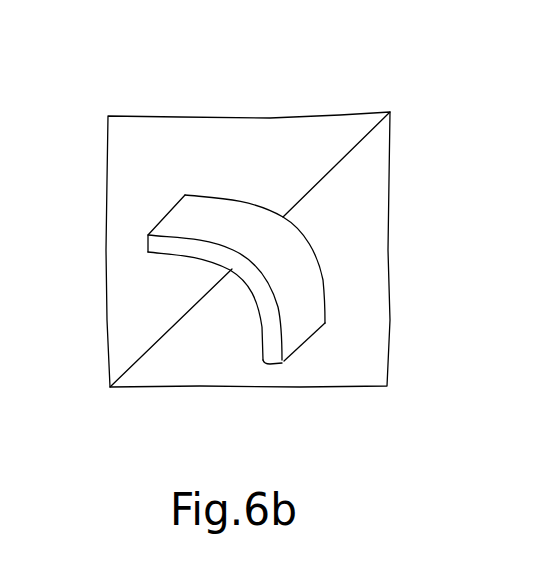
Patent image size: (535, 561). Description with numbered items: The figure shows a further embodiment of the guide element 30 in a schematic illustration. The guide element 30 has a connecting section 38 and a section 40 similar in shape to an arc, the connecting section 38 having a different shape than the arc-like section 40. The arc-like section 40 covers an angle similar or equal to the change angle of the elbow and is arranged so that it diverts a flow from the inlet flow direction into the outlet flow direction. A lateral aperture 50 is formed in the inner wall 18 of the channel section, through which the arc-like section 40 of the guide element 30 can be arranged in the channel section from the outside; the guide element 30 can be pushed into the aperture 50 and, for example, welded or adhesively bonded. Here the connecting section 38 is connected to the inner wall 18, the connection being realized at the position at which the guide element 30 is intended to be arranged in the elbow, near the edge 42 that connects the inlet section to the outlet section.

The inner wall 18 is at (124, 293).
The guide element 30 is at (302, 327).
The connecting section 38 is at (298, 248).
The section similar in shape to an arc 40 is at (273, 308).
The edge 42 is at (157, 347).
The lateral aperture 50 is at (205, 193).